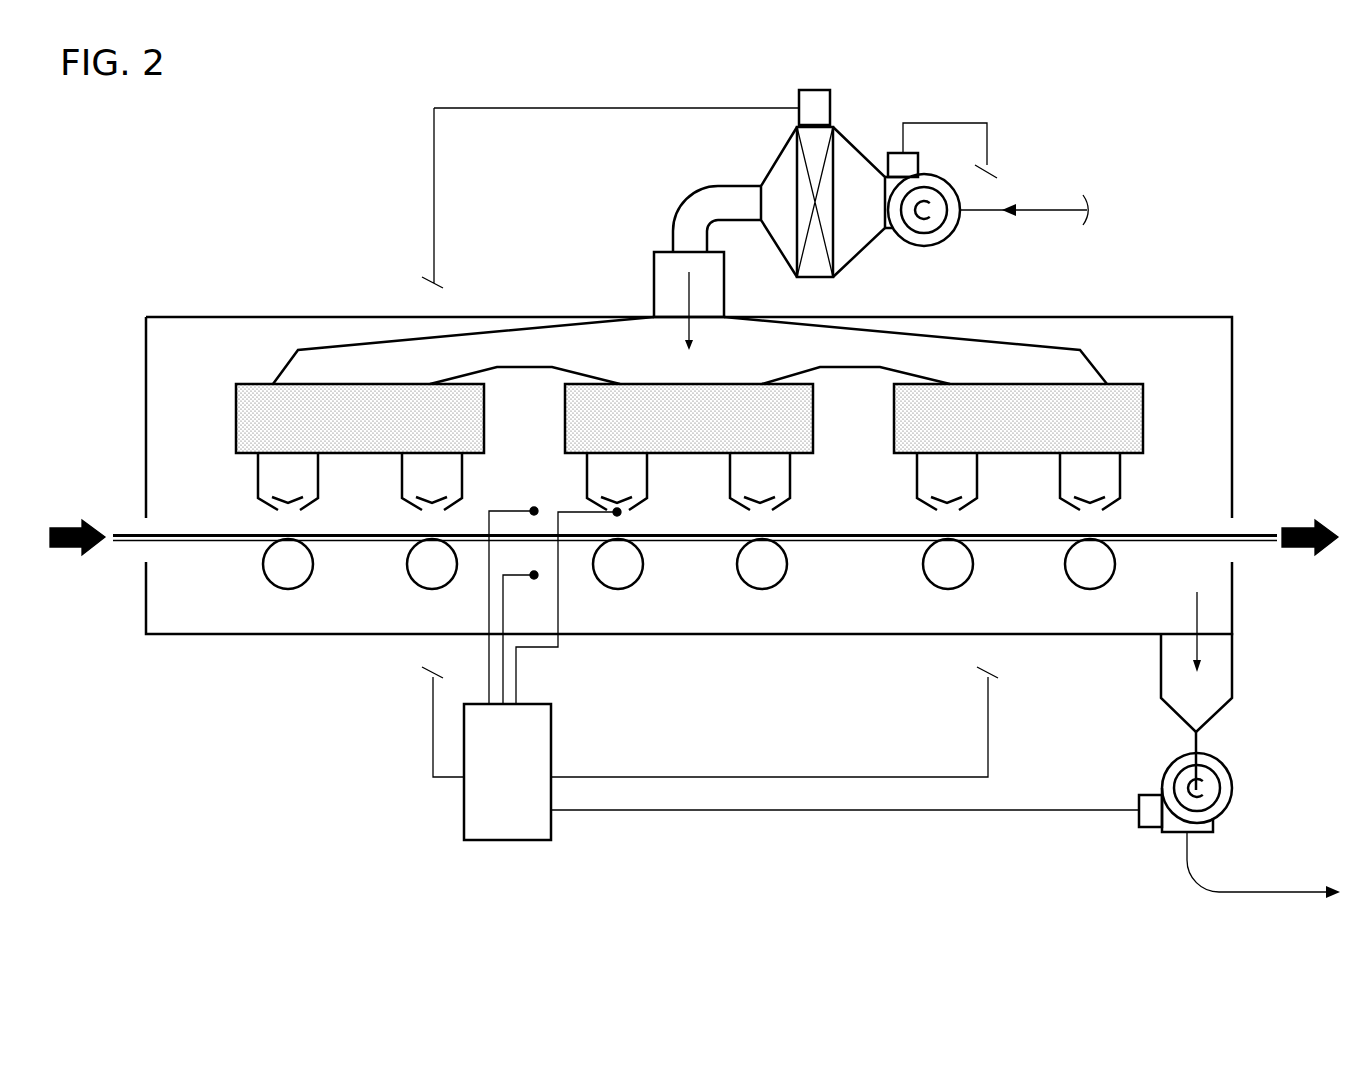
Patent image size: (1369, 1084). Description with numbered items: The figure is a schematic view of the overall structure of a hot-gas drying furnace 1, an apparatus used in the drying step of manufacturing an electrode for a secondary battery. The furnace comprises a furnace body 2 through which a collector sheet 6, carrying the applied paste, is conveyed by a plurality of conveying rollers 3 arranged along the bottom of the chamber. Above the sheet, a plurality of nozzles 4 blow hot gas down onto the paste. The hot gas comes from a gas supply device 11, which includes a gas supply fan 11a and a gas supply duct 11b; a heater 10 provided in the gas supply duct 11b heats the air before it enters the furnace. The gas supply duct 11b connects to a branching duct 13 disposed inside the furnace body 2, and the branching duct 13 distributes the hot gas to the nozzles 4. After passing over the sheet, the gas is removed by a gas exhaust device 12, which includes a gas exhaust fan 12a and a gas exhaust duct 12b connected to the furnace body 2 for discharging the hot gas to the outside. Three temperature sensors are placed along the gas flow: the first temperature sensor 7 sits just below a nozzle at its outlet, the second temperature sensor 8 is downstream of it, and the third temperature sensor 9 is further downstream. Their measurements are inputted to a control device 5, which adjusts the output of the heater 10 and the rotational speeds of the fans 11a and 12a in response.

The hot-gas drying furnace 1 is at (242, 165).
The furnace body 2 is at (208, 315).
The conveying rollers 3 is at (263, 563).
The nozzles 4 is at (258, 474).
The control device 5 is at (505, 845).
The collector sheet 6 is at (190, 535).
The first temperature sensor 7 is at (617, 512).
The second temperature sensor 8 is at (534, 508).
The third temperature sensor 9 is at (534, 578).
The heater 10 is at (825, 280).
The gas supply device 11 is at (648, 198).
The gas supply fan 11a is at (950, 240).
The gas supply duct 11b is at (695, 185).
The gas exhaust device 12 is at (1232, 737).
The gas exhaust fan 12a is at (1165, 765).
The gas exhaust duct 12b is at (1161, 660).
The branching duct 13 is at (600, 340).